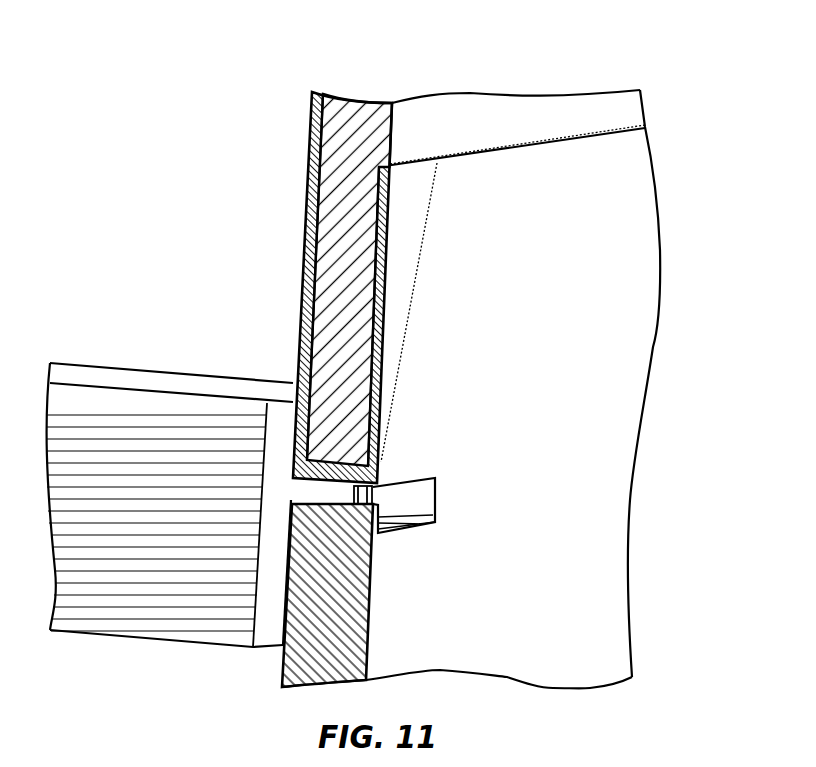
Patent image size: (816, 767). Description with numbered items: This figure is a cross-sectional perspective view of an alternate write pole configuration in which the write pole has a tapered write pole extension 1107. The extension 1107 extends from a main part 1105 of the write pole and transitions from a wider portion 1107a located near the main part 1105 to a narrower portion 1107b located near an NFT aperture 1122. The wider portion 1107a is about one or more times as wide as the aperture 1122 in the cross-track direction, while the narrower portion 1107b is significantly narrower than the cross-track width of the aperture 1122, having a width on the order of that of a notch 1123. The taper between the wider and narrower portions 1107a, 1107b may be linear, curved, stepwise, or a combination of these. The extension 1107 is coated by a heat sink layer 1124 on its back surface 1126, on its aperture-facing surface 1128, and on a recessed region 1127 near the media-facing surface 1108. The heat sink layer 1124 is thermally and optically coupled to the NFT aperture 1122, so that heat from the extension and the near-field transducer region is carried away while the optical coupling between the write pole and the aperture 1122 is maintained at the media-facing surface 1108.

The main part of the write pole 1105 is at (498, 115).
The write pole extension 1107 is at (335, 268).
The wider portion 1107a is at (430, 173).
The narrower portion 1107b is at (382, 440).
The media-facing surface 1108 is at (617, 352).
The NFT aperture 1122 is at (425, 500).
The notch 1123 is at (396, 530).
The heat sink layer 1124 is at (300, 318).
The back surface 1126 is at (298, 353).
The recessed region 1127 is at (380, 330).
The aperture-facing surface 1128 is at (338, 465).